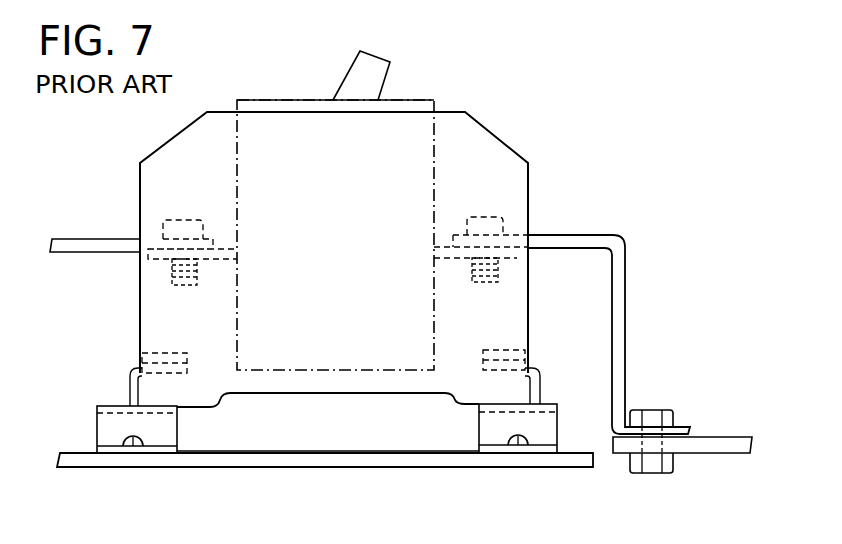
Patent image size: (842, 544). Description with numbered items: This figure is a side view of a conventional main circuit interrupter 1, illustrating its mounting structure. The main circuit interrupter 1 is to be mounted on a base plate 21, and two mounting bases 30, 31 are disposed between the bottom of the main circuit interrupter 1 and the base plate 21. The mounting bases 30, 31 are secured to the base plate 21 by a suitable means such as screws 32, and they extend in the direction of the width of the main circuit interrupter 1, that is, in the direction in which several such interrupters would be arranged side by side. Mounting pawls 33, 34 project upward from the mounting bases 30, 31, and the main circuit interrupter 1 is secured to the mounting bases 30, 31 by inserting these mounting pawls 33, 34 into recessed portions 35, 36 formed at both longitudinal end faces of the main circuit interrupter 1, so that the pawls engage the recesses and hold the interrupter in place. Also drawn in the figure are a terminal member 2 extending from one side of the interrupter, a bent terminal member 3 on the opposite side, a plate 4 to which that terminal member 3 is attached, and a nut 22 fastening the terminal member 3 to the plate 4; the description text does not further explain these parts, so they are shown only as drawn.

The main circuit interrupter 1 is at (497, 135).
The terminal plate 2 is at (95, 239).
The bent terminal 3 is at (626, 258).
The mounting plate 4 is at (727, 437).
The base plate 21 is at (322, 451).
The nut 22 is at (652, 418).
The mounting base 30 is at (110, 430).
The mounting base 31 is at (480, 430).
The screws 32 is at (133, 447).
The mounting pawl 33 is at (128, 372).
The mounting pawl 34 is at (542, 368).
The recessed portion 35 is at (177, 353).
The recessed portion 36 is at (497, 350).